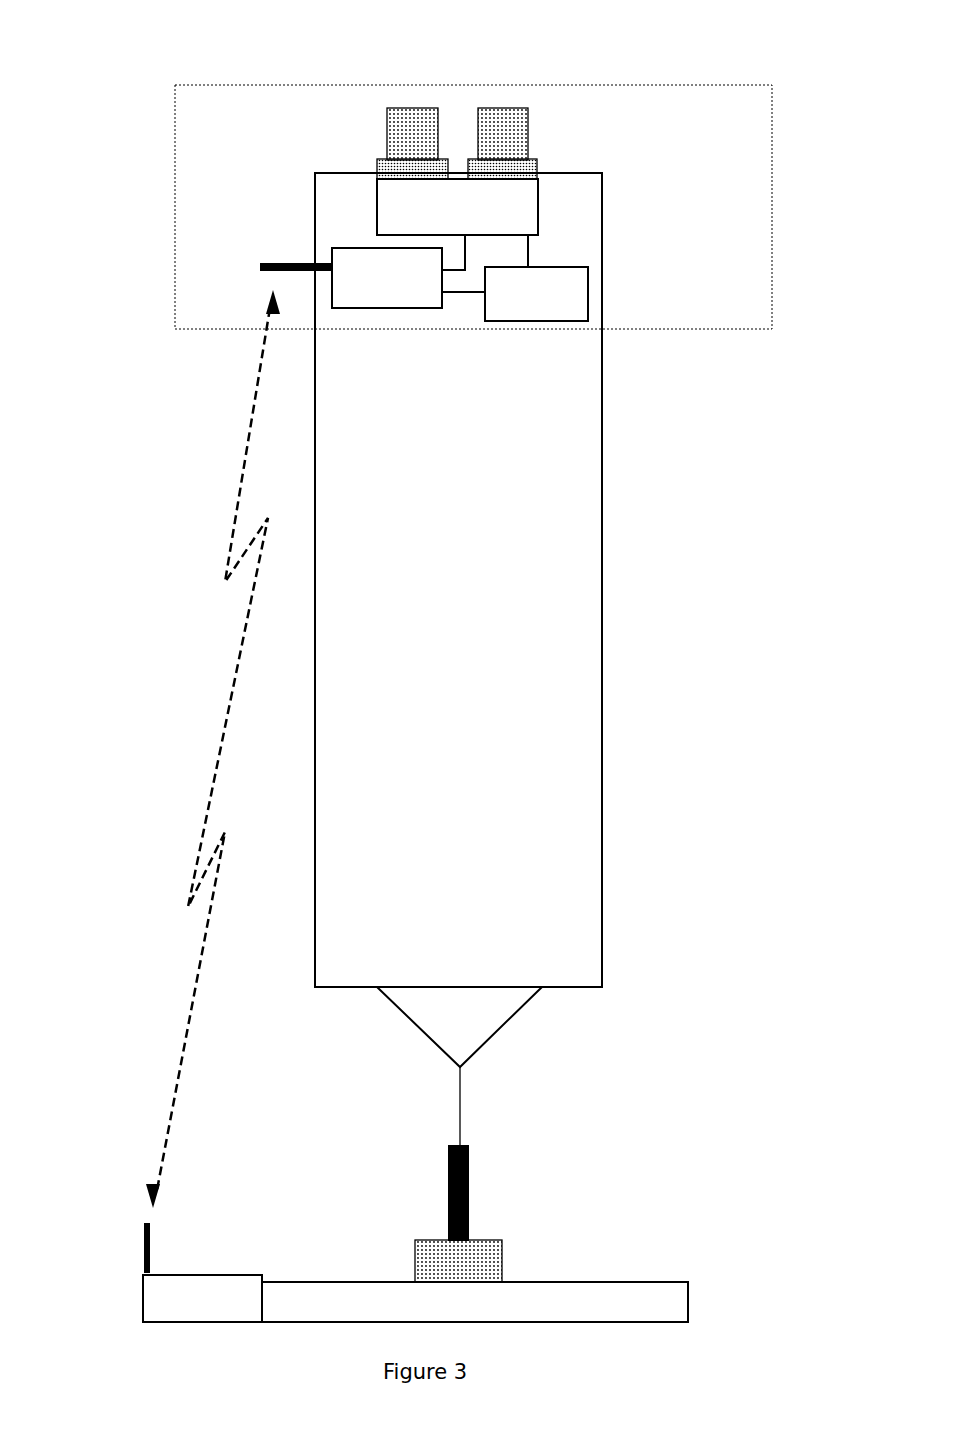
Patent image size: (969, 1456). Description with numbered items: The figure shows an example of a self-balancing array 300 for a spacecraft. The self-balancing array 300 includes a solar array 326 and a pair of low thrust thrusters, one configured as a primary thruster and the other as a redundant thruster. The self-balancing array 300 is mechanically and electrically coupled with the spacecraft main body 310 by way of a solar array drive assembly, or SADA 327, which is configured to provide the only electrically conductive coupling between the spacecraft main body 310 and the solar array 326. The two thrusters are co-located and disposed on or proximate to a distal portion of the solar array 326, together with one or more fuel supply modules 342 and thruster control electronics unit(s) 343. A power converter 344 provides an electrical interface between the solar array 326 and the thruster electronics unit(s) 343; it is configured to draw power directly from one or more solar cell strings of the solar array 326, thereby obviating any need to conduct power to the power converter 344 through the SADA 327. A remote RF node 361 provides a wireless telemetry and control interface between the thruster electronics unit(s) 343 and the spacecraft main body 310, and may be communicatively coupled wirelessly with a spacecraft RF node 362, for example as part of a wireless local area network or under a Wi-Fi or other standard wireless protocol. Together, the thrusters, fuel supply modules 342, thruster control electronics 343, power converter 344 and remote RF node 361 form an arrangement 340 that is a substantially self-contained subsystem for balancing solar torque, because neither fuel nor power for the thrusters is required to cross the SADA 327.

The self-balancing array 300 is at (130, 60).
The spacecraft main body 310 is at (690, 1297).
The solar array 326 is at (603, 593).
The solar array drive assembly (SADA) 327 is at (503, 1263).
The arrangement 340 is at (685, 330).
The fuel supply module 342 is at (542, 163).
The thruster control electronics unit 343 is at (525, 208).
The power converter 344 is at (583, 288).
The remote RF node 361 is at (332, 252).
The spacecraft RF node 362 is at (145, 1287).